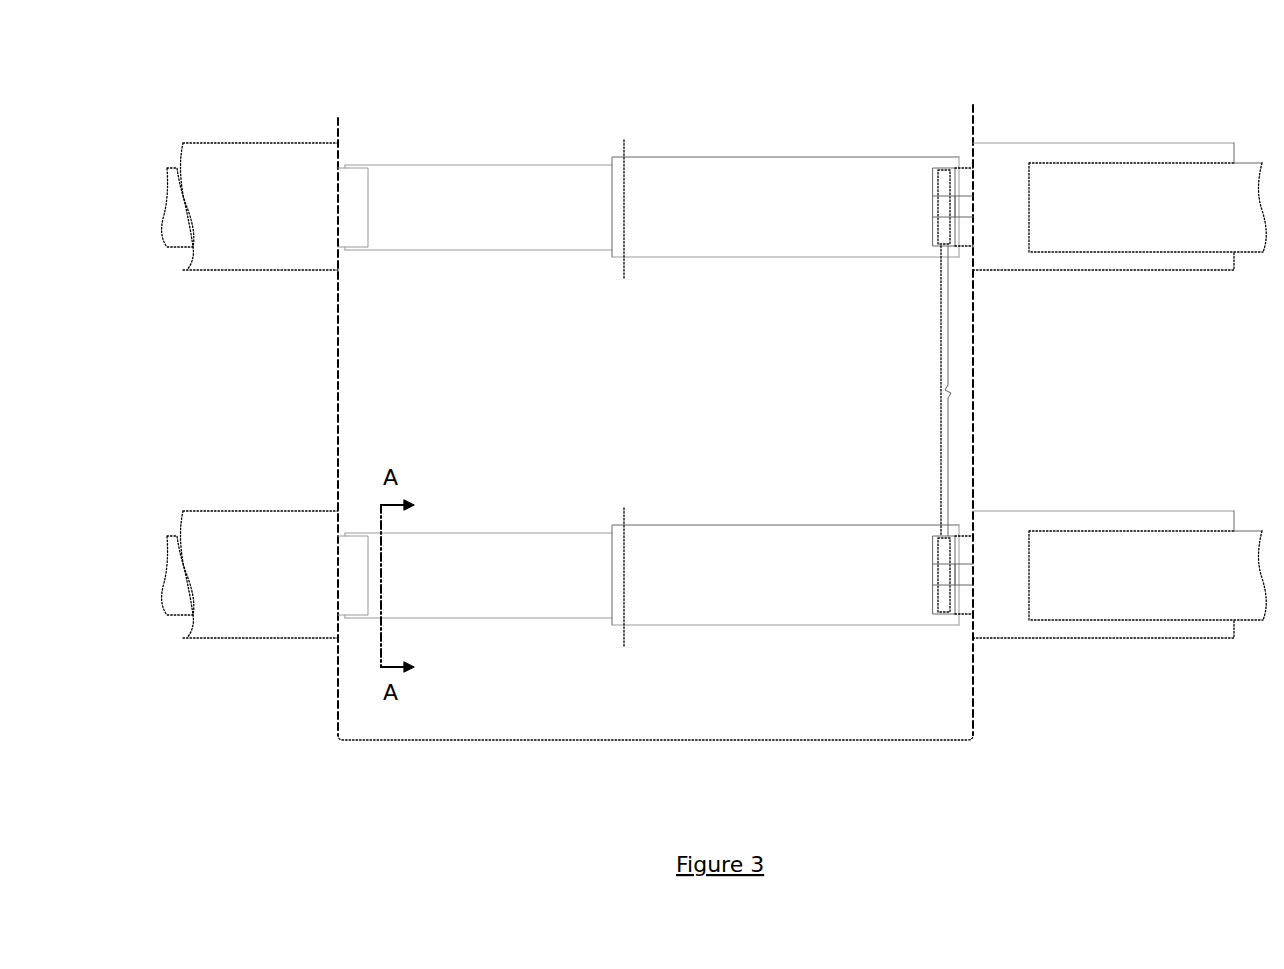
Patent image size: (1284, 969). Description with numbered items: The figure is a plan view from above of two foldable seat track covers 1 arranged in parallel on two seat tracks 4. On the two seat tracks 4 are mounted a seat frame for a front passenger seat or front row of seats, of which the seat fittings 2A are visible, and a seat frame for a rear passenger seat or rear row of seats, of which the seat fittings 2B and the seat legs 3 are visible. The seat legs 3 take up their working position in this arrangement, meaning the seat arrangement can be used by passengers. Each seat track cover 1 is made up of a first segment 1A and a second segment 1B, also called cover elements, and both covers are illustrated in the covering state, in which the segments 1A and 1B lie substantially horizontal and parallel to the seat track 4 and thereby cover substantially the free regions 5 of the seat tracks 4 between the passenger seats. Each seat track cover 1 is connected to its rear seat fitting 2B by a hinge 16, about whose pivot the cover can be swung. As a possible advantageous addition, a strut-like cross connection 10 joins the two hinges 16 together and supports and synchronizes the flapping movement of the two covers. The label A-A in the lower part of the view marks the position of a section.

The seat track cover 1 is at (648, 333).
The first segment 1A is at (406, 170).
The second segment 1B is at (828, 160).
The seat fitting 2A is at (245, 150).
The seat fitting 2B is at (1148, 152).
The seat leg 3 is at (1248, 165).
The seat track 4 is at (173, 215).
The free region 5 is at (655, 741).
The strut-like cross connection 10 is at (941, 416).
The hinge 16 is at (946, 163).